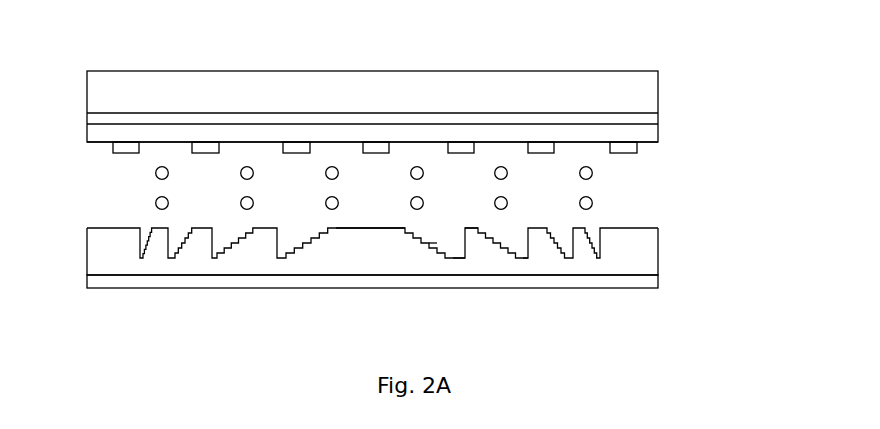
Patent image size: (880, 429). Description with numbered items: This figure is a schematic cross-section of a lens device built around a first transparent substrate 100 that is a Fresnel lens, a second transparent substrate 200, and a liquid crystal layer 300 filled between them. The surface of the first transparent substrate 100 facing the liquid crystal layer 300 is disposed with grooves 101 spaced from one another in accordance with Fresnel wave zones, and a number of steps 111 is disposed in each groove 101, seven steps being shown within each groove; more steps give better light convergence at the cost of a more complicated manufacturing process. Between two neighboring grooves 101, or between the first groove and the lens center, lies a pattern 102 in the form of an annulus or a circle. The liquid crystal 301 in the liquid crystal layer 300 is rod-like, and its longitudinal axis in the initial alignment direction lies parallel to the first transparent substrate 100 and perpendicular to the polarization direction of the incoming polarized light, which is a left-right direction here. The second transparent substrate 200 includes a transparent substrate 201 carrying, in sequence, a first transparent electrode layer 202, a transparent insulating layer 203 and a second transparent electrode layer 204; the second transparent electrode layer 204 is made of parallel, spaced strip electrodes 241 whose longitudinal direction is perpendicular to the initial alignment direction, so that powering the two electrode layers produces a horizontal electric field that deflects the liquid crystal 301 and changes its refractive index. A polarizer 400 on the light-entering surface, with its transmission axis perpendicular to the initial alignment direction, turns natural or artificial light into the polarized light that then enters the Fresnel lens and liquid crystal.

The first transparent substrate 100 is at (658, 253).
The groove 101 is at (457, 236).
The pattern 102 is at (376, 230).
The step 111 is at (437, 246).
The second transparent substrate 200 is at (737, 36).
The transparent substrate 201 is at (658, 87).
The first transparent electrode layer 202 is at (658, 114).
The transparent insulating layer 203 is at (658, 128).
The second transparent electrode layer 204 is at (637, 153).
The strip electrode 241 is at (113, 148).
The liquid crystal layer 300 is at (737, 150).
The liquid crystal 301 is at (593, 171).
The polarizer 400 is at (658, 283).